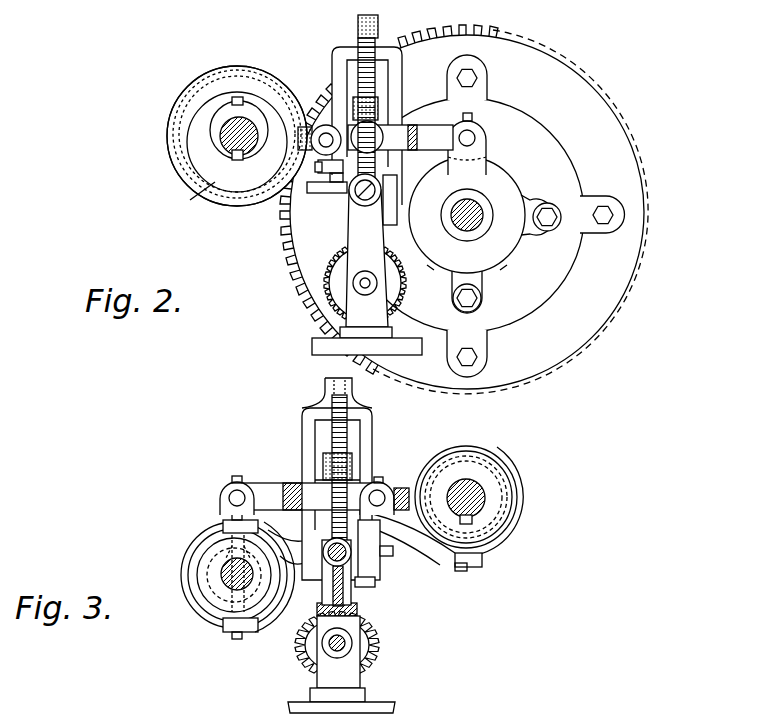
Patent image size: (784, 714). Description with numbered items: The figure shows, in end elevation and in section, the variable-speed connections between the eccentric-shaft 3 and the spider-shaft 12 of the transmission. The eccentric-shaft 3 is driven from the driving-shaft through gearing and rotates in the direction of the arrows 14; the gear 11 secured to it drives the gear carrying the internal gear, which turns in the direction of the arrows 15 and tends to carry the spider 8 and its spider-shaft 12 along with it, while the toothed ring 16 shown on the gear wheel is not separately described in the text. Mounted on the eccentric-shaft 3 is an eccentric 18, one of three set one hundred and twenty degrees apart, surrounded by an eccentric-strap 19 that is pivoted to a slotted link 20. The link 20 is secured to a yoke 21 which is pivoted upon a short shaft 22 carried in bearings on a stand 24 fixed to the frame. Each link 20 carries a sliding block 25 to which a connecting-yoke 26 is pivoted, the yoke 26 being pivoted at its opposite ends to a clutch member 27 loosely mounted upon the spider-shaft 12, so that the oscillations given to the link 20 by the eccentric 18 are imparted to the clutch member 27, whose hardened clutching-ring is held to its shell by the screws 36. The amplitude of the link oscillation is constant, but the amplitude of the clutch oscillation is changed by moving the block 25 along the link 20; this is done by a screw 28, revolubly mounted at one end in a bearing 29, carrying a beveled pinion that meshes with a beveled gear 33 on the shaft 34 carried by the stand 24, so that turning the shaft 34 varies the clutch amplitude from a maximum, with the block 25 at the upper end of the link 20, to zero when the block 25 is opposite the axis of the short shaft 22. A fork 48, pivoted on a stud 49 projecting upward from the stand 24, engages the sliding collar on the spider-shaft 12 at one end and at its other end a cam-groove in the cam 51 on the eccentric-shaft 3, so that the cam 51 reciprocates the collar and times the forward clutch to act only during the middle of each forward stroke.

In FIG. 2, the eccentric-shaft 3 is at (230, 143).
In FIG. 3, the eccentric-shaft 3 is at (477, 508).
In FIG. 2, the spider 8 is at (528, 206).
In FIG. 3, the gear 11 is at (190, 712).
In FIG. 2, the spider-shaft 12 is at (471, 227).
In FIG. 3, the spider-shaft 12 is at (228, 581).
In FIG. 2, the arrows indicating rotation of eccentric-shaft 14 is at (170, 82).
In FIG. 3, the arrows indicating rotation of eccentric-shaft 14 is at (503, 442).
In FIG. 2, the arrows indicating rotation of internal gear 15 is at (628, 88).
In FIG. 3, the arrows indicating rotation of internal gear 15 is at (190, 530).
In FIG. 2, the ratchet ring 16 is at (277, 102).
In FIG. 2, the eccentric 18 is at (187, 202).
In FIG. 2, the eccentric-strap 19 is at (285, 78).
In FIG. 2, the slotted link 20 is at (394, 88).
In FIG. 2, the yoke 21 is at (320, 188).
In FIG. 2, the short shaft 22 is at (355, 200).
In FIG. 2, the stand 24 is at (378, 306).
In FIG. 3, the stand 24 is at (360, 596).
In FIG. 2, the sliding block 25 is at (383, 118).
In FIG. 3, the sliding block 25 is at (323, 485).
In FIG. 2, the connecting-yoke 26 is at (432, 124).
In FIG. 3, the connecting-yoke 26 is at (264, 492).
In FIG. 2, the clutch member 27 is at (498, 190).
In FIG. 3, the clutch member 27 is at (226, 528).
In FIG. 2, the screw 28 is at (382, 44).
In FIG. 3, the screw 28 is at (343, 440).
In FIG. 2, the bearing 29 is at (376, 27).
In FIG. 3, the bearing 29 is at (327, 388).
In FIG. 2, the beveled gear 33 is at (340, 296).
In FIG. 3, the beveled gear 33 is at (368, 652).
In FIG. 2, the shaft 34 is at (357, 277).
In FIG. 3, the shaft 34 is at (344, 650).
In FIG. 2, the screws 36 is at (498, 270).
In FIG. 3, the fork 48 is at (265, 628).
In FIG. 3, the stud 49 is at (343, 497).
In FIG. 3, the cam 51 is at (497, 527).